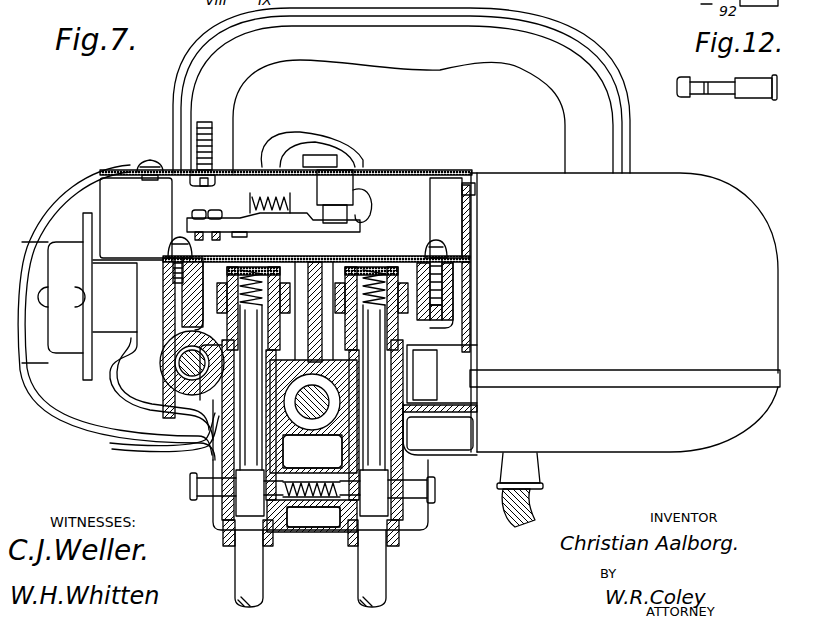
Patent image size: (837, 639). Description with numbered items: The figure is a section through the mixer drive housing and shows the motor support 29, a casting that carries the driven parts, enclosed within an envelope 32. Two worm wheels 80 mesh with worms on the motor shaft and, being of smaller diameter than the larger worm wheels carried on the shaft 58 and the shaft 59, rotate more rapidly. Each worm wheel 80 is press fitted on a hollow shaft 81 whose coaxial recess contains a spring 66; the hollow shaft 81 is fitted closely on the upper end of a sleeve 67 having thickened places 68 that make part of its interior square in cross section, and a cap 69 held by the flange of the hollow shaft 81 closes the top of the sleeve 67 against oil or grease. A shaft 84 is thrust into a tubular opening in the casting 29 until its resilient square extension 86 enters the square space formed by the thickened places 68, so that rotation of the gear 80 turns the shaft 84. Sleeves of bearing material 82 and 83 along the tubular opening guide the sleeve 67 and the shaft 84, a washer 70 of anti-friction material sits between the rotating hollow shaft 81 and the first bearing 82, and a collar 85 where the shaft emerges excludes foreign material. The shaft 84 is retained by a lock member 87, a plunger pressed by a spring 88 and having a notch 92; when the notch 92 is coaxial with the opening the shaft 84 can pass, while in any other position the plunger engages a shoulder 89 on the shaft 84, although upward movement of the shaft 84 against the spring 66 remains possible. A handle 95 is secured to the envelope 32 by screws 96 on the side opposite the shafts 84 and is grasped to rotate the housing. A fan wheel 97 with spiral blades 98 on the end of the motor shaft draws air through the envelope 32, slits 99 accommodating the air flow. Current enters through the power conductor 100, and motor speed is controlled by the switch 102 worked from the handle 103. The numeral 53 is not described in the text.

In FIG. 7, the motor support 29 is at (453, 322).
In FIG. 7, the envelope 32 is at (683, 180).
In FIG. 7, the shaft sleeve 53 is at (98, 288).
In FIG. 7, the shaft 58 is at (313, 367).
In FIG. 7, the shaft 59 is at (192, 392).
In FIG. 7, the spring 66 is at (251, 268).
In FIG. 7, the sleeve 67 is at (212, 305).
In FIG. 7, the thickened places 68 is at (200, 323).
In FIG. 7, the cap 69 is at (258, 268).
In FIG. 7, the washer 70 is at (210, 318).
In FIG. 7, the worm wheel 80 is at (295, 262).
In FIG. 7, the hollow shaft 81 is at (232, 256).
In FIG. 7, the bearing sleeve 82 is at (268, 320).
In FIG. 7, the bearing sleeve 83 is at (208, 460).
In FIG. 7, the shaft 84 is at (264, 575).
In FIG. 7, the collar 85 is at (275, 540).
In FIG. 7, the square extension 86 is at (425, 245).
In FIG. 7, the lock member 87 is at (190, 487).
In FIG. 12, the lock member 87 is at (754, 99).
In FIG. 7, the spring 88 is at (312, 516).
In FIG. 7, the shoulder 89 is at (250, 470).
In FIG. 7, the notch 92 is at (212, 492).
In FIG. 12, the notch 92 is at (728, 92).
In FIG. 7, the handle 95 is at (602, 82).
In FIG. 7, the screw 96 is at (205, 186).
In FIG. 7, the fan wheel 97 is at (60, 242).
In FIG. 7, the blade 98 is at (93, 225).
In FIG. 7, the slit 99 is at (24, 280).
In FIG. 7, the power conductor 100 is at (541, 470).
In FIG. 7, the switch 102 is at (287, 193).
In FIG. 7, the handle 103 is at (297, 136).